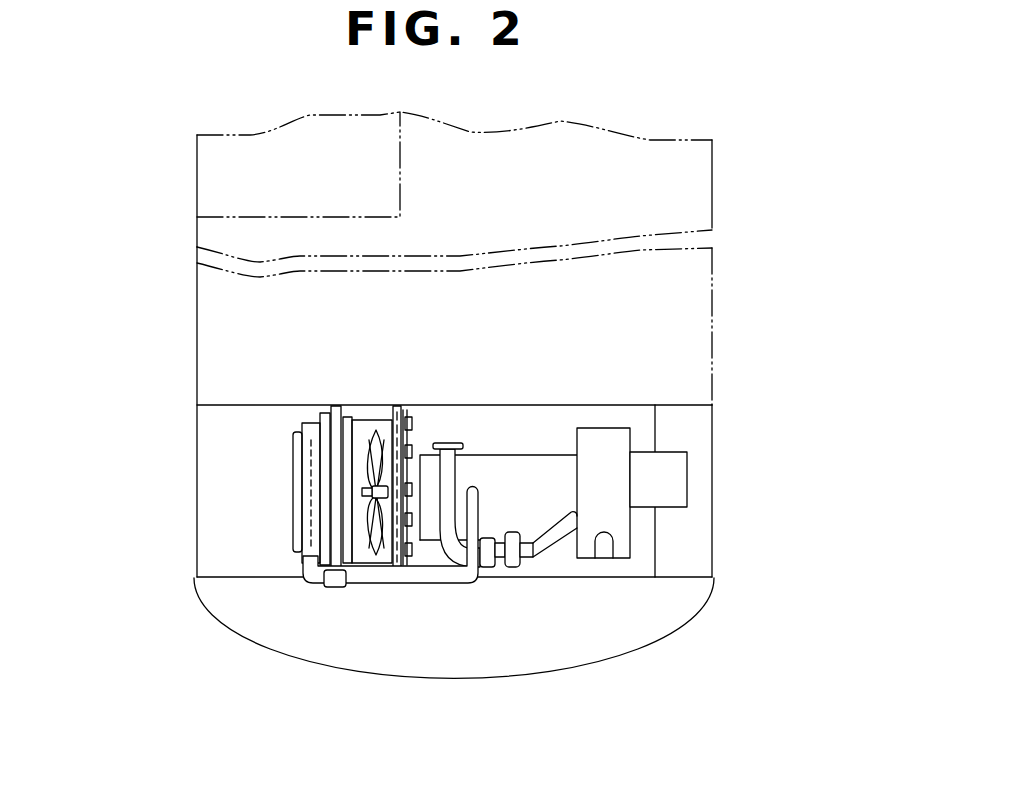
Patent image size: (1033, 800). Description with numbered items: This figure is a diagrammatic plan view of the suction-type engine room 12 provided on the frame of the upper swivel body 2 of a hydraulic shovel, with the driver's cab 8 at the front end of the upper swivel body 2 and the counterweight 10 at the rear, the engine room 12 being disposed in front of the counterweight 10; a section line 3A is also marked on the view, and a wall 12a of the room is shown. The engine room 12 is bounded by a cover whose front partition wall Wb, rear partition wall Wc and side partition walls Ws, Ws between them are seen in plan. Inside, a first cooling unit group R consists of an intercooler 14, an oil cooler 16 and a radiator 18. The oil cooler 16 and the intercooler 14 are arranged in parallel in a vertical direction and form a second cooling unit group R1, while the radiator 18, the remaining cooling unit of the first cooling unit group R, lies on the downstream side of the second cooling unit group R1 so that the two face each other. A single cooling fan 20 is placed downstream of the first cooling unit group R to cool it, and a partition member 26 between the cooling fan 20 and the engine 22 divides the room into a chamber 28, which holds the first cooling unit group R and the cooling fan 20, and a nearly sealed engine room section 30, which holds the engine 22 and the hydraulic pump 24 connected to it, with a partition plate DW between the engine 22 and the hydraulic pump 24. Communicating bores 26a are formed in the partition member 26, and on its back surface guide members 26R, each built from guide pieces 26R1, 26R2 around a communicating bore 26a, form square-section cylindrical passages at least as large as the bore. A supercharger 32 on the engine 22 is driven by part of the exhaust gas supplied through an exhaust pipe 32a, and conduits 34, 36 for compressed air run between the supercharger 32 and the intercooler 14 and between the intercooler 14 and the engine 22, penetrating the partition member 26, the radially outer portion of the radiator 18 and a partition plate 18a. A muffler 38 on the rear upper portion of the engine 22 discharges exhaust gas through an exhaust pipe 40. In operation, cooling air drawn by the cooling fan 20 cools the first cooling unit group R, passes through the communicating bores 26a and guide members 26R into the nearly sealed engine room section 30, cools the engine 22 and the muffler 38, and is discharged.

The upper swivel body 2 is at (765, 378).
The driver's cab 8 is at (238, 173).
The counterweight 10 is at (240, 618).
The engine room 12 is at (484, 396).
The bulkhead 12a is at (642, 427).
The intercooler 14 is at (292, 487).
The oil cooler 16 is at (318, 413).
The radiator 18 is at (357, 415).
The partition plate 18a is at (335, 405).
The cooling fan 20 is at (375, 447).
The engine 22 is at (540, 453).
The hydraulic pump 24 is at (675, 480).
The partition member 26 is at (387, 405).
The communicating bore 26a is at (380, 540).
The guide member 26R is at (401, 394).
The guide piece 26R1 is at (415, 405).
The guide piece 26R2 is at (420, 416).
The chamber 28 is at (257, 458).
The nearly sealed engine room section 30 is at (557, 425).
The supercharger 32 is at (512, 567).
The exhaust pipe 32a is at (535, 560).
The conduit 34 is at (467, 585).
The conduit 36 is at (370, 580).
The muffler 38 is at (600, 443).
The exhaust pipe 40 is at (607, 547).
The view direction arrow 3A is at (428, 598).
The first cooling unit group R is at (310, 392).
The second cooling unit group R1 is at (279, 531).
The side partition wall Ws is at (197, 560).
The front partition wall Wb is at (538, 405).
The rear partition wall Wc is at (620, 582).
The partition plate DW is at (657, 540).